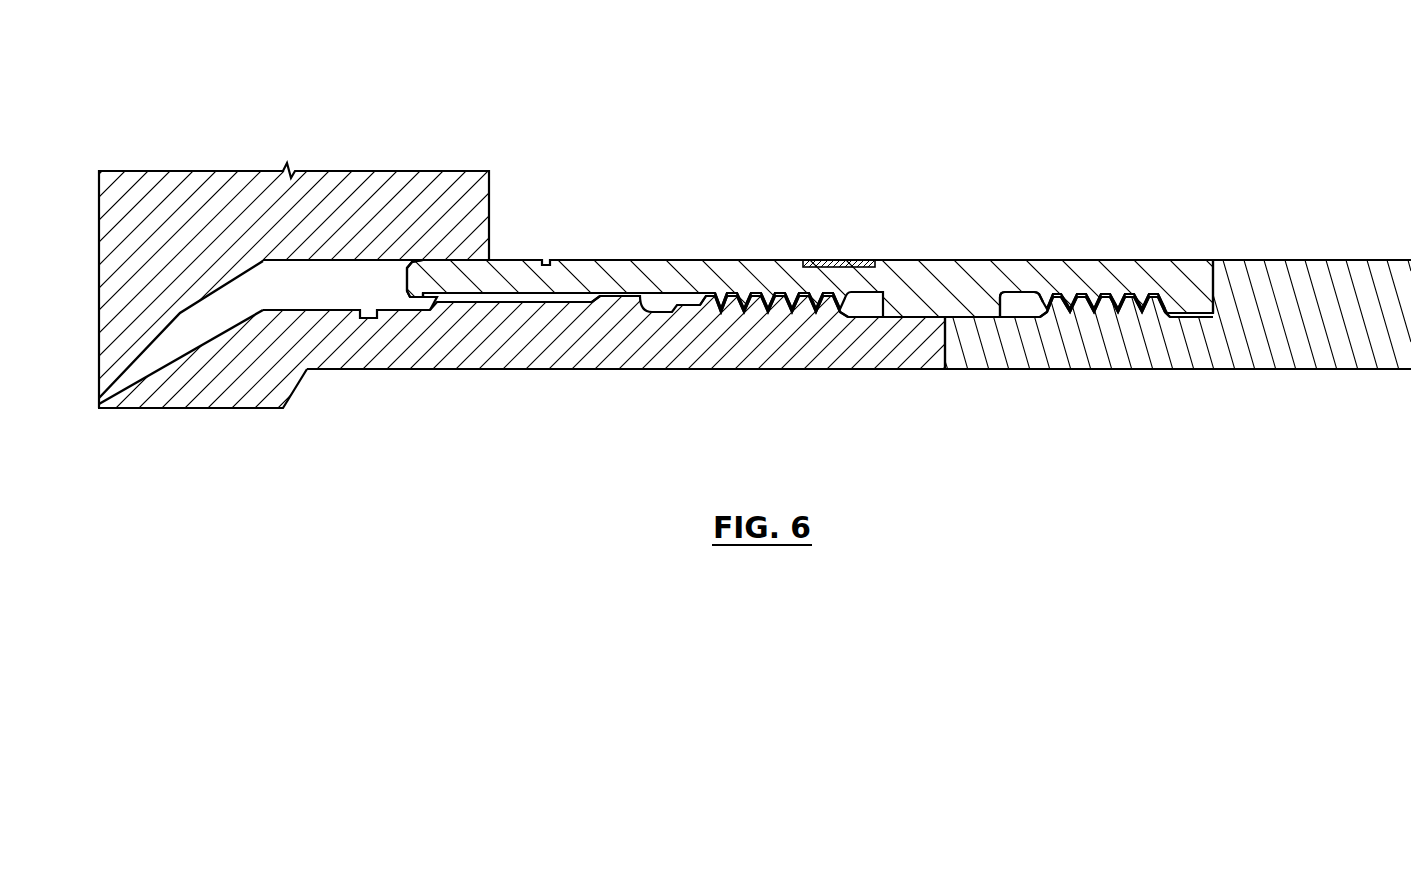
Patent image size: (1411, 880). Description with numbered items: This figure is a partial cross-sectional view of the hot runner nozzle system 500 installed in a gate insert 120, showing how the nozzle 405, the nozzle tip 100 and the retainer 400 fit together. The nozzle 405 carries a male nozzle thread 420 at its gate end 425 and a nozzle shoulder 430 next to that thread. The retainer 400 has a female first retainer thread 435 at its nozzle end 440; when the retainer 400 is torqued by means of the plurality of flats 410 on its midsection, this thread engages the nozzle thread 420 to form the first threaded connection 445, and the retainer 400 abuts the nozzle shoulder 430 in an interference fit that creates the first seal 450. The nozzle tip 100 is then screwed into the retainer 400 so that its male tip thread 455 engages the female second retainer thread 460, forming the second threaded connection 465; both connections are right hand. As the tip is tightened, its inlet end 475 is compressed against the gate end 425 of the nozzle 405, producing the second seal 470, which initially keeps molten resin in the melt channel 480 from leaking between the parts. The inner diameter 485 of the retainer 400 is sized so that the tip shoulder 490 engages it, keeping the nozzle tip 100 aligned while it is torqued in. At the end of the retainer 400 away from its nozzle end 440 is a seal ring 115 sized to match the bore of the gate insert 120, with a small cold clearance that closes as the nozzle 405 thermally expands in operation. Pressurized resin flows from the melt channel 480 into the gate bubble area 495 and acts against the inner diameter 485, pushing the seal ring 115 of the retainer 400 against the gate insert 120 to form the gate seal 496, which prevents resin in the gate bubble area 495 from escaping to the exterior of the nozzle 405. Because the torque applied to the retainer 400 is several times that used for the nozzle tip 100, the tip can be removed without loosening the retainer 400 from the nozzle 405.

The nozzle tip 100 is at (222, 393).
The seal ring 115 is at (437, 262).
The gate insert 120 is at (172, 183).
The retainer 400 is at (948, 262).
The nozzle 405 is at (1366, 275).
The plurality of flats 410 is at (837, 261).
The nozzle thread 420 is at (1139, 318).
The gate end 425 is at (1076, 351).
The nozzle shoulder 430 is at (1215, 292).
The first retainer thread 435 is at (1132, 296).
The nozzle end 440 is at (1047, 262).
The first threaded connection 445 is at (1125, 197).
The first seal 450 is at (1213, 262).
The tip thread 455 is at (755, 312).
The second retainer thread 460 is at (748, 295).
The second threaded connection 465 is at (824, 213).
The second seal 470 is at (947, 372).
The inlet end 475 is at (919, 352).
The melt channel 480 is at (831, 418).
The inner diameter 485 is at (407, 297).
The tip shoulder 490 is at (600, 295).
The gate bubble area 495 is at (308, 296).
The gate seal 496 is at (444, 249).
The hot runner nozzle system 500 is at (720, 133).